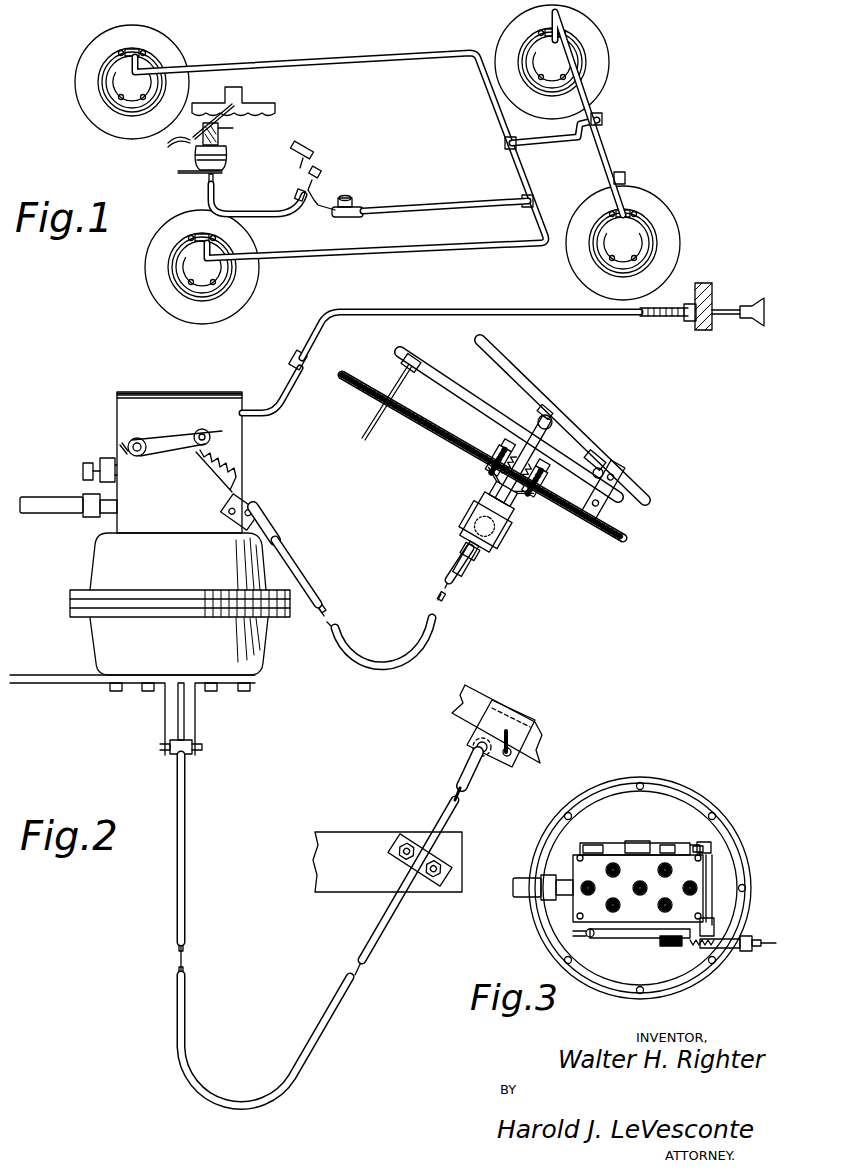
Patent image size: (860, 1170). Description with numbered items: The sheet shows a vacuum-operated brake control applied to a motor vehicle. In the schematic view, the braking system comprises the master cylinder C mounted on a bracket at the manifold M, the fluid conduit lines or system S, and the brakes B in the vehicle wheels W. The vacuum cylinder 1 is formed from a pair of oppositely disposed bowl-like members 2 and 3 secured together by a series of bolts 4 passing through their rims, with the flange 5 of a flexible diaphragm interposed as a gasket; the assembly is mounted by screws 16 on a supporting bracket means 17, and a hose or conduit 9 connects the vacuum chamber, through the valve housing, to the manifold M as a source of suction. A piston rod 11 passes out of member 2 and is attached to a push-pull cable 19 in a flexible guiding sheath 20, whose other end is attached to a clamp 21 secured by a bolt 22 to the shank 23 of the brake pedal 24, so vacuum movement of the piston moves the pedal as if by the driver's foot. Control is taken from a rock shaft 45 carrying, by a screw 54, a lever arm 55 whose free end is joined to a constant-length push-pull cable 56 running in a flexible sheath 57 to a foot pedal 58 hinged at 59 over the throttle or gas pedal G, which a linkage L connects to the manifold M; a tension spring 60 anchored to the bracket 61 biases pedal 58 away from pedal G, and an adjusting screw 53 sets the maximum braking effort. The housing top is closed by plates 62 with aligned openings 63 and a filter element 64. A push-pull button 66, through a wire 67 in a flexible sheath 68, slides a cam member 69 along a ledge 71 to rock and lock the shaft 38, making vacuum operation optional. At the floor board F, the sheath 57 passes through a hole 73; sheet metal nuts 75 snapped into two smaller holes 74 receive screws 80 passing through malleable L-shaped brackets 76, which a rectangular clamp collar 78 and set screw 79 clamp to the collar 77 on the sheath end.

In FIG. 1, the vacuum cylinder 1 is at (193, 162).
In FIG. 2, the vacuum cylinder 1 is at (85, 625).
In FIG. 2, the bowl-like member 2 is at (95, 645).
In FIG. 2, the bowl-like member 3 is at (93, 555).
In FIG. 3, the bowl-like member 3 is at (552, 912).
In FIG. 3, the bolts 4 is at (712, 845).
In FIG. 2, the flange 5 is at (137, 607).
In FIG. 1, the hose or conduit 9 is at (192, 138).
In FIG. 2, the hose or conduit 9 is at (35, 513).
In FIG. 3, the hose or conduit 9 is at (525, 879).
In FIG. 2, the piston rod 11 is at (178, 692).
In FIG. 2, the screws 16 is at (118, 691).
In FIG. 2, the supporting bracket means 17 is at (78, 683).
In FIG. 2, the push-pull cable 19 is at (175, 730).
In FIG. 1, the flexible guiding sheath 20 is at (250, 216).
In FIG. 2, the flexible guiding sheath 20 is at (180, 990).
In FIG. 1, the clamp 21 is at (301, 198).
In FIG. 2, the clamp 21 is at (470, 742).
In FIG. 2, the bolt 22 is at (505, 760).
In FIG. 1, the shank 23 is at (328, 203).
In FIG. 2, the shank 23 is at (545, 748).
In FIG. 1, the brake pedal 24 is at (322, 177).
In FIG. 3, the rock shaft 38 is at (662, 843).
In FIG. 2, the rock shaft 45 is at (138, 440).
In FIG. 3, the rock shaft 45 is at (590, 938).
In FIG. 2, the adjusting screw 53 is at (82, 470).
In FIG. 3, the adjusting screw 53 is at (560, 878).
In FIG. 2, the screw 54 is at (123, 450).
In FIG. 3, the screw 54 is at (573, 933).
In FIG. 2, the lever arm 55 is at (168, 450).
In FIG. 3, the lever arm 55 is at (625, 940).
In FIG. 2, the push-pull cable 56 is at (202, 430).
In FIG. 3, the push-pull cable 56 is at (678, 947).
In FIG. 2, the flexible sheath 57 is at (298, 568).
In FIG. 3, the flexible sheath 57 is at (742, 952).
In FIG. 1, the foot pedal 58 is at (310, 150).
In FIG. 2, the foot pedal 58 is at (525, 378).
In FIG. 2, the hinge 59 is at (612, 476).
In FIG. 2, the tension spring 60 is at (212, 490).
In FIG. 3, the tension spring 60 is at (692, 948).
In FIG. 2, the bracket 61 is at (262, 504).
In FIG. 3, the bracket 61 is at (716, 928).
In FIG. 2, the plates 62 is at (237, 371).
In FIG. 3, the plates 62 is at (702, 905).
In FIG. 3, the openings 63 is at (609, 866).
In FIG. 2, the filter element 64 is at (115, 393).
In FIG. 3, the filter element 64 is at (612, 868).
In FIG. 2, the push-pull button 66 is at (745, 307).
In FIG. 2, the wire 67 is at (309, 362).
In FIG. 3, the wire 67 is at (710, 855).
In FIG. 2, the flexible sheath 68 is at (471, 335).
In FIG. 3, the flexible sheath 68 is at (701, 848).
In FIG. 3, the cam member 69 is at (636, 843).
In FIG. 3, the ledge 71 is at (654, 842).
In FIG. 2, the hole 73 is at (509, 458).
In FIG. 2, the smaller holes 74 is at (466, 446).
In FIG. 2, the sheet metal nuts 75 is at (462, 450).
In FIG. 2, the L-shaped brackets 76 is at (470, 505).
In FIG. 2, the collar 77 is at (468, 495).
In FIG. 2, the clamp collar 78 is at (468, 518).
In FIG. 2, the set screw 79 is at (477, 559).
In FIG. 2, the screws 80 is at (492, 438).
In FIG. 1, the vehicle wheels W is at (180, 63).
In FIG. 1, the brakes B is at (150, 87).
In FIG. 1, the manifold M is at (258, 110).
In FIG. 1, the fluid conduit lines or system S is at (448, 200).
In FIG. 1, the master cylinder C is at (345, 218).
In FIG. 2, the throttle or gas pedal G is at (489, 393).
In FIG. 2, the linkage L is at (375, 421).
In FIG. 2, the floor board F is at (625, 538).